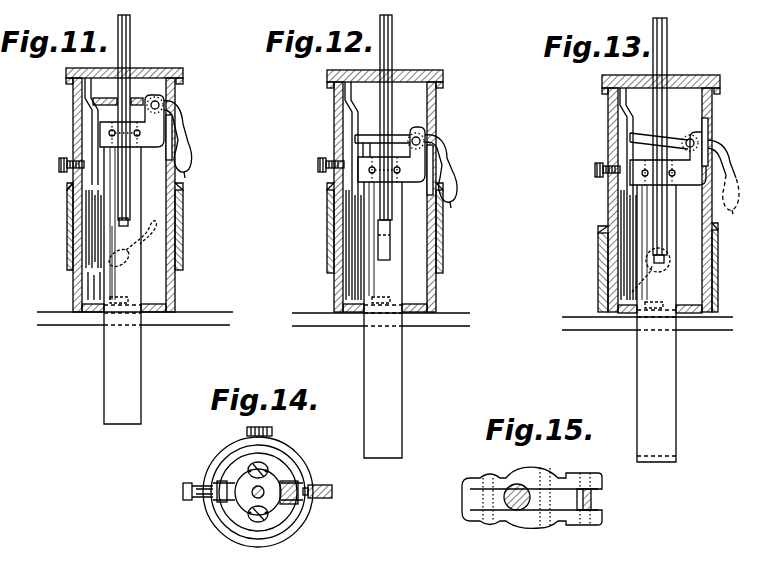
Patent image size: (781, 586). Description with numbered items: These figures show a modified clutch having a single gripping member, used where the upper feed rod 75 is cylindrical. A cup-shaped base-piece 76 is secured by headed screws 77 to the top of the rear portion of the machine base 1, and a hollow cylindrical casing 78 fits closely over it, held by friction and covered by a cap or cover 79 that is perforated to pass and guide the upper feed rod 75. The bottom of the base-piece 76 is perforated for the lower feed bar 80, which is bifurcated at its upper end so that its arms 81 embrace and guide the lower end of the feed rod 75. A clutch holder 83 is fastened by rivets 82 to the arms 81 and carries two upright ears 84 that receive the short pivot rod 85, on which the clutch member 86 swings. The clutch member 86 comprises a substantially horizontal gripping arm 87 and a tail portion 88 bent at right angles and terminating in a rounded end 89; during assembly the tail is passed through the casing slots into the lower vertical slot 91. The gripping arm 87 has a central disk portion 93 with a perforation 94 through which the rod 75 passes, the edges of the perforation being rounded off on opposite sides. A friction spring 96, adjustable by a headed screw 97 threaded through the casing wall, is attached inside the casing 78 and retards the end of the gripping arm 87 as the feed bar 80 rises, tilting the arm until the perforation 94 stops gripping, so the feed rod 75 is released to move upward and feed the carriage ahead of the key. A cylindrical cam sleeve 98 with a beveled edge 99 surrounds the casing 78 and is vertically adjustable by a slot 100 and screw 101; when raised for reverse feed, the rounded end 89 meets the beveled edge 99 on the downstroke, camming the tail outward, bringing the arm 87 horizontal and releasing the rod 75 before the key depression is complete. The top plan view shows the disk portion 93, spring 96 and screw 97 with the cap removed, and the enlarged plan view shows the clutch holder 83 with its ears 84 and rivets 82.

In FIG. 11, the base 1 is at (199, 320).
In FIG. 12, the base 1 is at (440, 321).
In FIG. 13, the base 1 is at (705, 325).
In FIG. 11, the upper feed rod 75 is at (130, 52).
In FIG. 12, the upper feed rod 75 is at (392, 58).
In FIG. 13, the upper feed rod 75 is at (667, 52).
In FIG. 15, the upper feed rod 75 is at (511, 510).
In FIG. 11, the cup-shaped base-piece 76 is at (160, 297).
In FIG. 12, the cup-shaped base-piece 76 is at (420, 296).
In FIG. 13, the cup-shaped base-piece 76 is at (702, 298).
In FIG. 14, the cup-shaped base-piece 76 is at (273, 528).
In FIG. 12, the headed screws 77 is at (383, 261).
In FIG. 14, the headed screws 77 is at (266, 467).
In FIG. 11, the hollow cylindrical casing 78 is at (73, 101).
In FIG. 12, the hollow cylindrical casing 78 is at (436, 104).
In FIG. 13, the hollow cylindrical casing 78 is at (608, 125).
In FIG. 14, the hollow cylindrical casing 78 is at (291, 527).
In FIG. 12, the cap or cover 79 is at (432, 76).
In FIG. 13, the cap or cover 79 is at (692, 80).
In FIG. 11, the lower feed bar 80 is at (141, 400).
In FIG. 12, the lower feed bar 80 is at (402, 420).
In FIG. 13, the lower feed bar 80 is at (637, 373).
In FIG. 11, the arms 81 is at (115, 182).
In FIG. 12, the arms 81 is at (369, 201).
In FIG. 13, the arms 81 is at (645, 200).
In FIG. 15, the arms 81 is at (476, 514).
In FIG. 11, the rivets 82 is at (140, 133).
In FIG. 12, the rivets 82 is at (400, 170).
In FIG. 13, the rivets 82 is at (675, 173).
In FIG. 15, the rivets 82 is at (490, 477).
In FIG. 11, the clutch holder 83 is at (112, 131).
In FIG. 12, the clutch holder 83 is at (378, 160).
In FIG. 13, the clutch holder 83 is at (657, 160).
In FIG. 15, the clutch holder 83 is at (531, 472).
In FIG. 11, the upright ears 84 is at (168, 102).
In FIG. 12, the upright ears 84 is at (426, 143).
In FIG. 13, the upright ears 84 is at (692, 135).
In FIG. 15, the upright ears 84 is at (593, 477).
In FIG. 11, the pivot rod 85 is at (157, 100).
In FIG. 12, the pivot rod 85 is at (416, 136).
In FIG. 13, the pivot rod 85 is at (687, 139).
In FIG. 15, the pivot rod 85 is at (592, 502).
In FIG. 11, the clutch member 86 is at (184, 121).
In FIG. 12, the clutch member 86 is at (443, 147).
In FIG. 13, the clutch member 86 is at (724, 159).
In FIG. 12, the gripping arm 87 is at (403, 135).
In FIG. 14, the gripping arm 87 is at (230, 498).
In FIG. 11, the tail portion 88 is at (194, 150).
In FIG. 12, the tail portion 88 is at (452, 168).
In FIG. 14, the tail portion 88 is at (328, 485).
In FIG. 11, the rounded end 89 is at (186, 173).
In FIG. 12, the rounded end 89 is at (458, 213).
In FIG. 13, the rounded end 89 is at (730, 210).
In FIG. 11, the lower vertical slot 91 is at (172, 136).
In FIG. 12, the lower vertical slot 91 is at (426, 136).
In FIG. 13, the lower vertical slot 91 is at (712, 128).
In FIG. 12, the central disk portion 93 is at (396, 133).
In FIG. 13, the central disk portion 93 is at (660, 140).
In FIG. 14, the central disk portion 93 is at (276, 487).
In FIG. 11, the perforation 94 is at (137, 101).
In FIG. 11, the friction spring 96 is at (94, 104).
In FIG. 12, the friction spring 96 is at (355, 126).
In FIG. 13, the friction spring 96 is at (629, 125).
In FIG. 11, the headed screw 97 is at (59, 165).
In FIG. 12, the headed screw 97 is at (329, 157).
In FIG. 13, the headed screw 97 is at (600, 161).
In FIG. 14, the headed screw 97 is at (188, 483).
In FIG. 11, the cam sleeve 98 is at (67, 240).
In FIG. 12, the cam sleeve 98 is at (327, 250).
In FIG. 13, the cam sleeve 98 is at (598, 262).
In FIG. 14, the cam sleeve 98 is at (303, 514).
In FIG. 11, the beveled edge 99 is at (70, 193).
In FIG. 12, the beveled edge 99 is at (327, 195).
In FIG. 13, the beveled edge 99 is at (718, 235).
In FIG. 11, the slot 100 is at (183, 243).
In FIG. 11, the screw 101 is at (126, 267).
In FIG. 14, the screw 101 is at (272, 432).